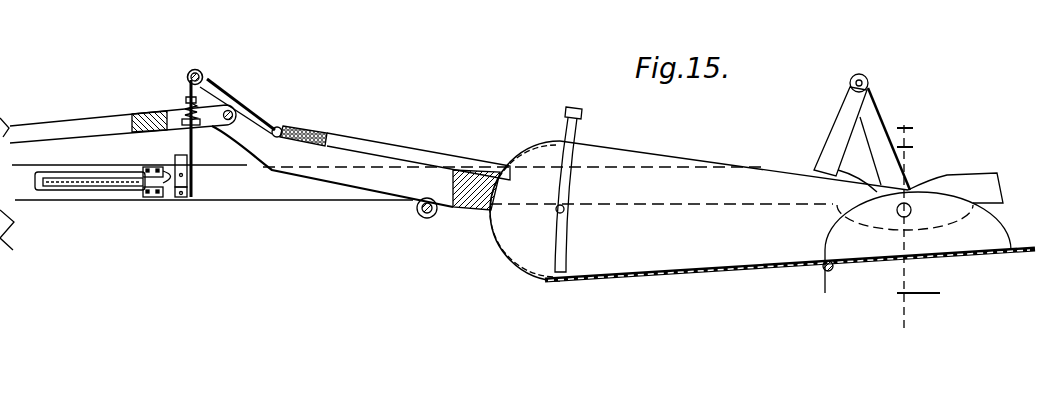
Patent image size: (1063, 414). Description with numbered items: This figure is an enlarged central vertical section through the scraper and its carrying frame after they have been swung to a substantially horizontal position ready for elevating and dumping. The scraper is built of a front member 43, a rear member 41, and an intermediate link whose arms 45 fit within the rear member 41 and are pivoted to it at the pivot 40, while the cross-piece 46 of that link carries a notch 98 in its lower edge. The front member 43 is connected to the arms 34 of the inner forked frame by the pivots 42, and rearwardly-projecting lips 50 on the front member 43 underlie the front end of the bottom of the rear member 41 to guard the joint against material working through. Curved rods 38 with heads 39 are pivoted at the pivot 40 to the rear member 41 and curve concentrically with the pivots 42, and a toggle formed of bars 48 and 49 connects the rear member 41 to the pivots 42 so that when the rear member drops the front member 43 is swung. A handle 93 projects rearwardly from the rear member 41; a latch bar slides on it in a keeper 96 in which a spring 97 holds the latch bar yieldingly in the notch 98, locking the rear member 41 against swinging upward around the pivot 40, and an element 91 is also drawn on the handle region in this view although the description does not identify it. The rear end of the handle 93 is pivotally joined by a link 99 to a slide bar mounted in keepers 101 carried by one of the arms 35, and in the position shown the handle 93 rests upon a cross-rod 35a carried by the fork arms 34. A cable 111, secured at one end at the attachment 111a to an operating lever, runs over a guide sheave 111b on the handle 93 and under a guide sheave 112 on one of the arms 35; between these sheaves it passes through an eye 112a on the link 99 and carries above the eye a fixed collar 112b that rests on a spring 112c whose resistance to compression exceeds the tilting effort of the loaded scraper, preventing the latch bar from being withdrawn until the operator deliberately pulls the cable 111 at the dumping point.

The arms 34 is at (298, 192).
The handle 93 is at (372, 177).
The cable 111 is at (68, 186).
The arms 35 is at (92, 200).
The keepers 101 is at (150, 200).
The guide sheave 112 is at (190, 178).
The eye 112a is at (184, 120).
The fixed collar 112b is at (186, 102).
The spring 112c is at (189, 99).
The link 99 is at (33, 124).
The cable attachment point 111a is at (499, 6).
The guide sheave 111b is at (201, 71).
The spring 97 is at (296, 126).
The keeper 96 is at (318, 134).
The connecting rod 91 is at (378, 147).
The notch 98 is at (500, 166).
The cross-rod 35a is at (432, 219).
The cross-piece 46 is at (546, 146).
The arms 45 is at (690, 223).
The rods 38 is at (568, 128).
The heads 39 is at (582, 112).
The pivot 40 is at (566, 210).
The rear member 41 is at (680, 275).
The rearwardly-projecting lips 50 is at (827, 272).
The toggle bar 48 is at (834, 128).
The toggle bar 49 is at (880, 118).
The pivots 42 is at (908, 206).
The front member 43 is at (930, 284).